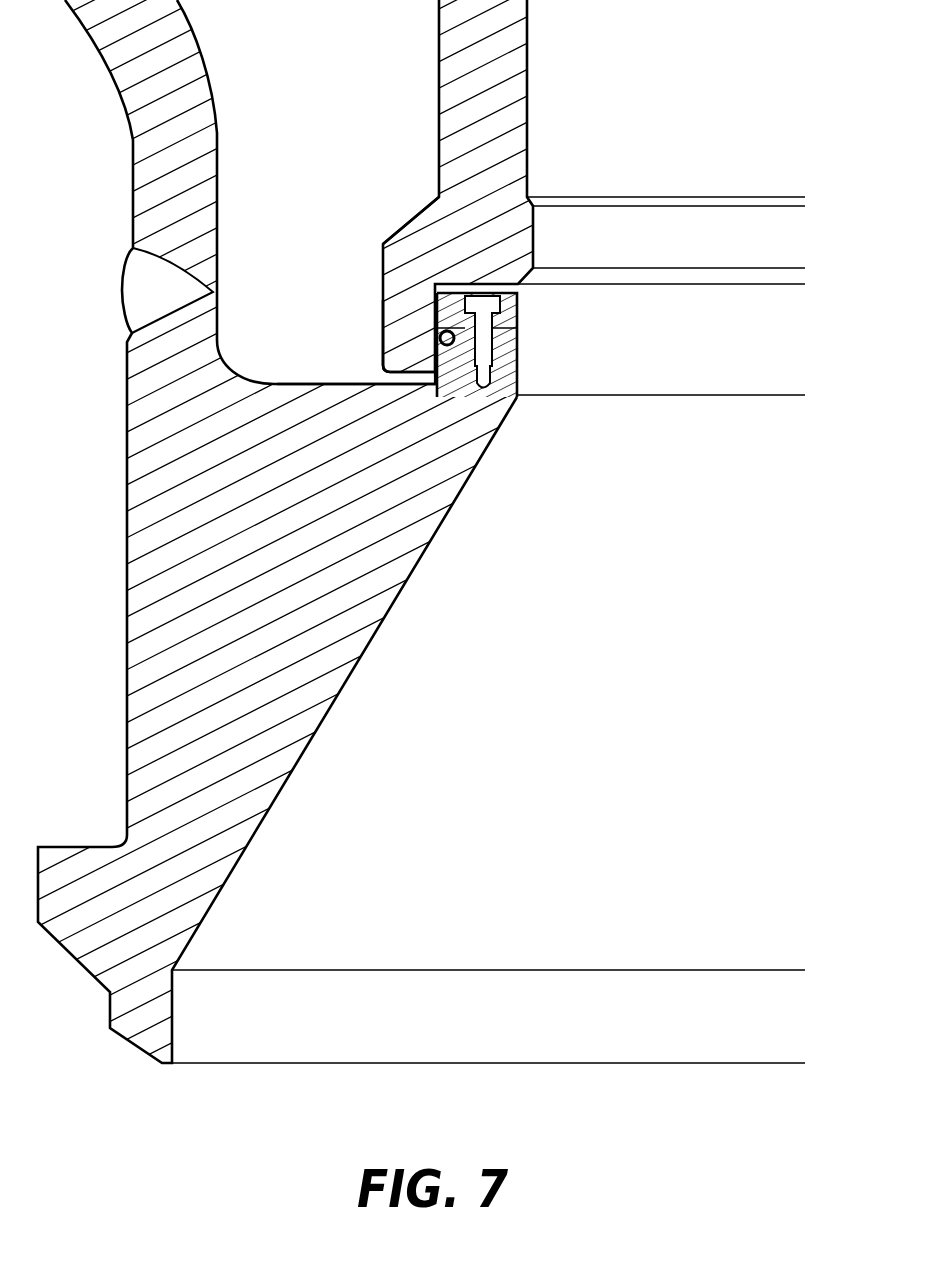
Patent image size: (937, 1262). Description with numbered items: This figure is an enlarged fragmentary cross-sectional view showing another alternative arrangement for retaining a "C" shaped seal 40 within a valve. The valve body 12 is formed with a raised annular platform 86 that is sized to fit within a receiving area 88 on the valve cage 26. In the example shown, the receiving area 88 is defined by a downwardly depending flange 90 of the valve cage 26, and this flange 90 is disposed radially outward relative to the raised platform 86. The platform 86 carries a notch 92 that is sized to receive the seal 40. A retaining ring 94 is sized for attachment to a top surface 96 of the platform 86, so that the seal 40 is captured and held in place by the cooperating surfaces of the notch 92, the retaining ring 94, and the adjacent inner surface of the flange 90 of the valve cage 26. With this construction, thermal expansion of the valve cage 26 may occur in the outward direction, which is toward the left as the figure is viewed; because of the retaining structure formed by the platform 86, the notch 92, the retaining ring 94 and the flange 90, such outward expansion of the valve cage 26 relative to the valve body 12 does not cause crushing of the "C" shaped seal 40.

The valve body 12 is at (207, 493).
The valve cage 26 is at (452, 118).
The receiving area 88 is at (437, 290).
The seal 40 is at (400, 283).
The downwardly depending flange 90 is at (407, 330).
The raised annular platform 86 is at (450, 347).
The notch 92 is at (447, 385).
The retaining ring 94 is at (518, 295).
The top surface 96 is at (517, 348).